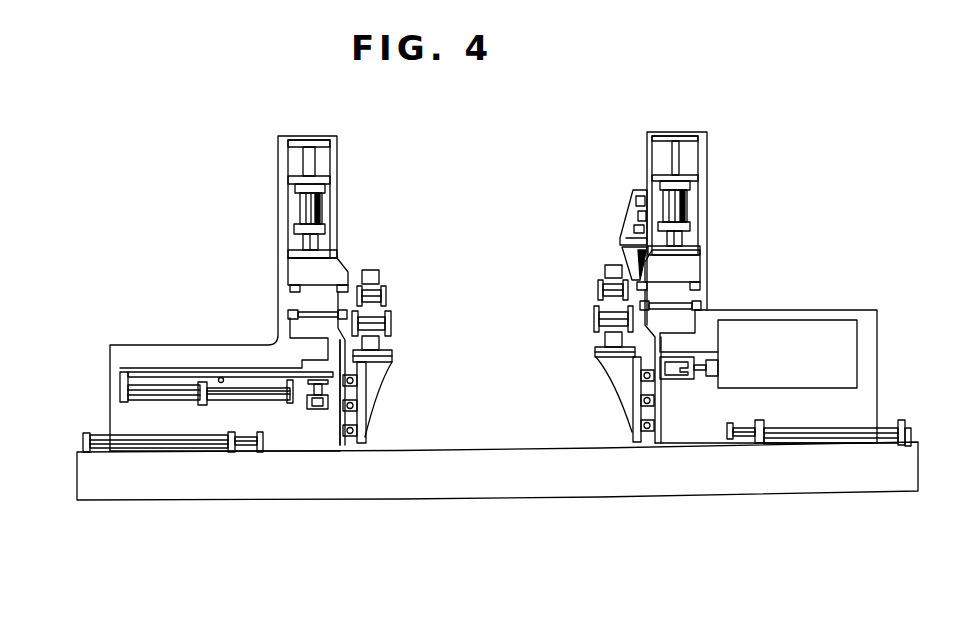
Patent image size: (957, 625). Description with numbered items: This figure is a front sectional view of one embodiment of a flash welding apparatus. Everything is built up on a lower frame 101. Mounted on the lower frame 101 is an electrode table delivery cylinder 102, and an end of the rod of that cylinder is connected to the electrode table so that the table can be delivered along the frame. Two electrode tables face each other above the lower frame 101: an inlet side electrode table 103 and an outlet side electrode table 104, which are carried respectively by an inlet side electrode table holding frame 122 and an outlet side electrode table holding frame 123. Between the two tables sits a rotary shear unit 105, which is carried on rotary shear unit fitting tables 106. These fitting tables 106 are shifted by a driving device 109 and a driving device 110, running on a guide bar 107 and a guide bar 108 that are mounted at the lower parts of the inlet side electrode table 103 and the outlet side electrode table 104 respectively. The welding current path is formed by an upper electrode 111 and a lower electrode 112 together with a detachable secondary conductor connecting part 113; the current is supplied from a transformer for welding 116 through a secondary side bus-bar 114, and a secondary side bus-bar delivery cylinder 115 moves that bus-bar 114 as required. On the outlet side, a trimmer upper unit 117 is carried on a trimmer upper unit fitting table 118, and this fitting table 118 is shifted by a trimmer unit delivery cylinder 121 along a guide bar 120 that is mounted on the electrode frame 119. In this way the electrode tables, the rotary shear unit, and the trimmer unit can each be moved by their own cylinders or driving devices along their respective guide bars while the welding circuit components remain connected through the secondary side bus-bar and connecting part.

The lower frame 101 is at (163, 500).
The electrode table delivery cylinder 102 is at (88, 433).
The inlet side electrode table 103 is at (225, 269).
The outlet side electrode table 104 is at (711, 206).
The rotary shear unit 105 is at (376, 270).
The rotary shear unit fitting tables 106 is at (385, 366).
The guide bar 107 is at (340, 452).
The guide bar 108 is at (641, 450).
The driving device 109 is at (350, 403).
The driving device 110 is at (640, 400).
The upper electrode 111 is at (345, 265).
The lower electrode 112 is at (343, 313).
The detachable secondary conductor connecting part 113 is at (682, 380).
The secondary side bus-bar 114 is at (168, 370).
The secondary side bus-bar delivery cylinder 115 is at (270, 403).
The transformer for welding 116 is at (878, 338).
The trimmer upper unit 117 is at (620, 252).
The trimmer upper unit fitting table 118 is at (626, 222).
The electrode frame 119 is at (688, 195).
The guide bar 120 is at (648, 193).
The trimmer unit delivery cylinder 121 is at (646, 217).
The inlet side electrode table holding frame 122 is at (279, 208).
The outlet side electrode table holding frame 123 is at (708, 236).